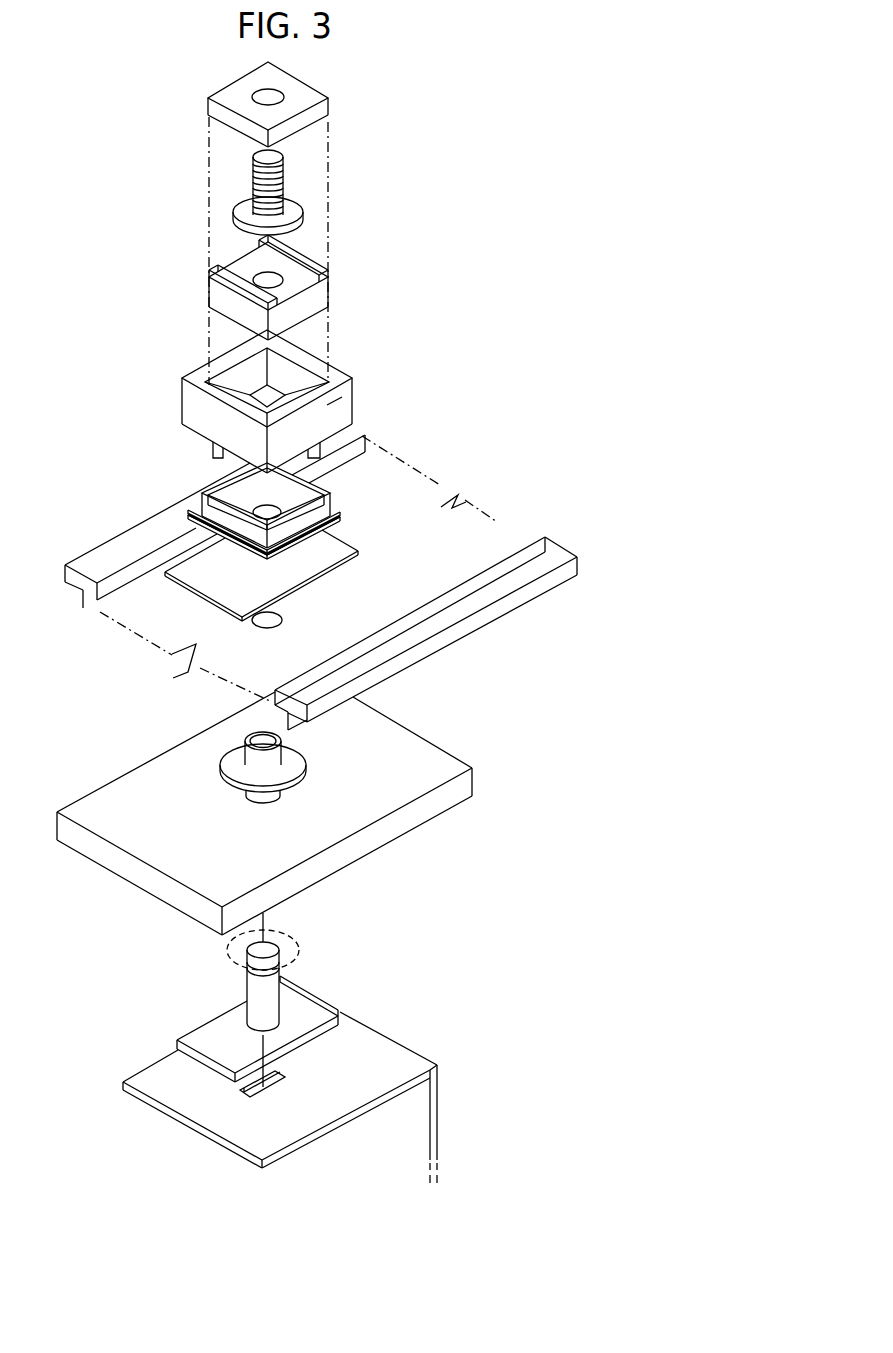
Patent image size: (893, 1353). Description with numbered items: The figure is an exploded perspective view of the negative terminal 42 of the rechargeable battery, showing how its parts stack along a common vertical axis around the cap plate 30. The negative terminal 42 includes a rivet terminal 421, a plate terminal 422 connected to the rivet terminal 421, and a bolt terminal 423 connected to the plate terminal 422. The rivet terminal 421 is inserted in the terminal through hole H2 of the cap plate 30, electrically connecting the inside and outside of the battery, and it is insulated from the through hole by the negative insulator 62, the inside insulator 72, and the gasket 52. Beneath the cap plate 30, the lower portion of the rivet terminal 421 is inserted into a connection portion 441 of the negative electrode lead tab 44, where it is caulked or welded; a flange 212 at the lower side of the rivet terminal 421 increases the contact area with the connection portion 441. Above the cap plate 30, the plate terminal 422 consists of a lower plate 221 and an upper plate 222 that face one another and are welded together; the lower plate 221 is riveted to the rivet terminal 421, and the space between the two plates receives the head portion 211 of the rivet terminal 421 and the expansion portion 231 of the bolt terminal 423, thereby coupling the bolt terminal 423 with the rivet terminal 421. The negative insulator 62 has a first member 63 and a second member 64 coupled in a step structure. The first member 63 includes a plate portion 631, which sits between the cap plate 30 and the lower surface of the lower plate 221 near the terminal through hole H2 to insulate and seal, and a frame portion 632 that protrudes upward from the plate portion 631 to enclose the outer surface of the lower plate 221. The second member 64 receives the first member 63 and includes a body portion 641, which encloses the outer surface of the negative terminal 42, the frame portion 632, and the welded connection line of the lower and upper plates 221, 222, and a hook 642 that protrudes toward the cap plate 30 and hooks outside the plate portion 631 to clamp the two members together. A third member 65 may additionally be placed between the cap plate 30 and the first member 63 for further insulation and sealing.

The negative terminal 42 is at (160, 121).
The upper plate 222 is at (329, 103).
The bolt terminal 423 is at (252, 172).
The expansion portion 231 is at (237, 205).
The lower plate 221 is at (326, 283).
The plate terminal 422 is at (390, 305).
The body portion 641 is at (350, 392).
The hook 642 is at (333, 503).
The frame portion 632 is at (343, 514).
The plate portion 631 is at (318, 547).
The second member 64 is at (483, 291).
The first member 63 is at (483, 373).
The negative insulator 62 is at (530, 303).
The cap plate 30 is at (493, 535).
The third member 65 is at (197, 577).
The terminal through hole H2 is at (282, 621).
The inside insulator 72 is at (448, 758).
The gasket 52 is at (298, 767).
The head portion 211 is at (230, 945).
The rivet terminal 421 is at (255, 1000).
The flange 212 is at (192, 1034).
The negative electrode lead tab 44 is at (440, 1123).
The connection portion 441 is at (342, 1120).